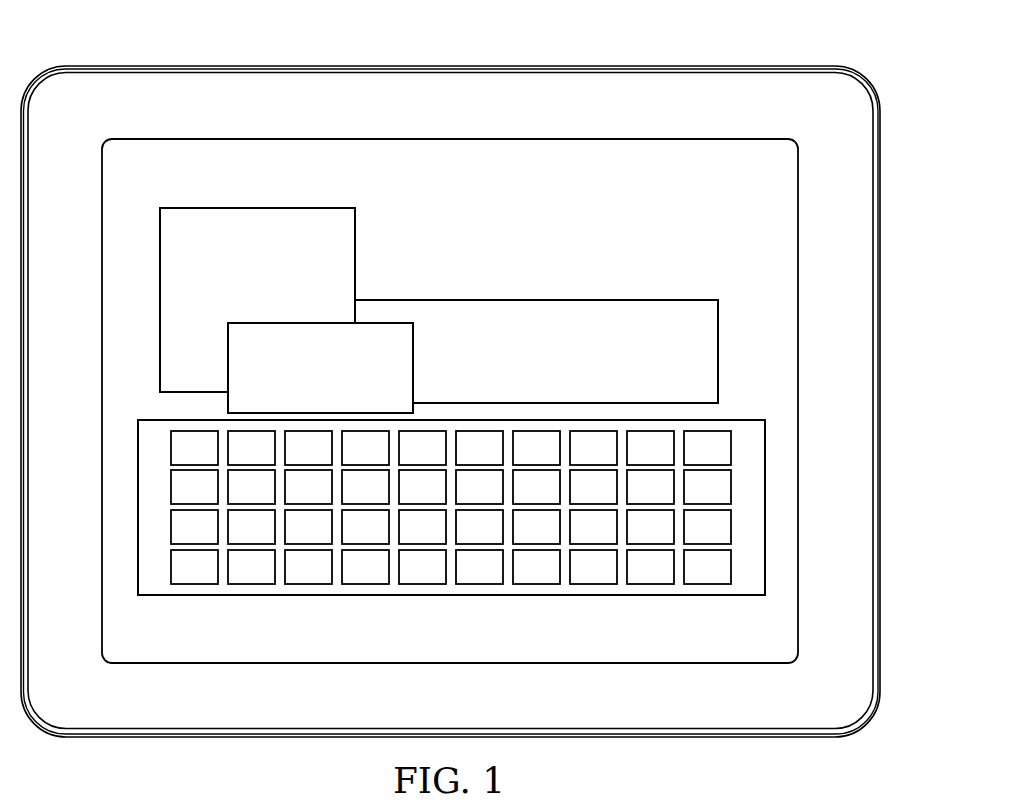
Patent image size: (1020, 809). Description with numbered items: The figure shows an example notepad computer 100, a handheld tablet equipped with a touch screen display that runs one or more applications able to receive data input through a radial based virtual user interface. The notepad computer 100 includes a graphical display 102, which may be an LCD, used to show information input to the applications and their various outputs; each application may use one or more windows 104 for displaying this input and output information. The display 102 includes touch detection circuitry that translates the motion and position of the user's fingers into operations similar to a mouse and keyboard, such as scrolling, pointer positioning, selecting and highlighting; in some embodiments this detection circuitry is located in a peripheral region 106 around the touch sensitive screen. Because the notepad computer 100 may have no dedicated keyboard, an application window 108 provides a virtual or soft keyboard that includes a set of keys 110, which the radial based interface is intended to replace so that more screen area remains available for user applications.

The notepad computer 100 is at (450, 368).
The graphical display 102 is at (429, 196).
The window 104 is at (235, 285).
The peripheral region 106 is at (429, 121).
The application window 108 is at (193, 598).
The keys 110 is at (308, 586).